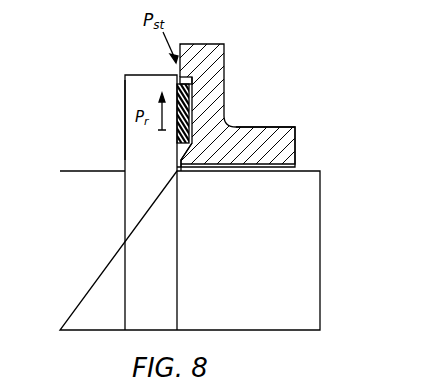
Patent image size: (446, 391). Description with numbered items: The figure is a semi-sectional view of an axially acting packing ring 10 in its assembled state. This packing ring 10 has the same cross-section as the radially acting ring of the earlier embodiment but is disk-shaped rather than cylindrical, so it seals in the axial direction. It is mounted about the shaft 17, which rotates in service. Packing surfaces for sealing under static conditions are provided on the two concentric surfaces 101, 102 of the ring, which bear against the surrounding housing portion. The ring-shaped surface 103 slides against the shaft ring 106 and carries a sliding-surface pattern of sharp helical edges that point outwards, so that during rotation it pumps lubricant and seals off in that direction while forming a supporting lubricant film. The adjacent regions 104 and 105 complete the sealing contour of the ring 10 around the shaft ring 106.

The axially acting packing ring 10 is at (177, 137).
The shaft 17 is at (306, 272).
The concentric surface 101 is at (193, 83).
The concentric surface 102 is at (226, 124).
The ring-shaped surface 103 is at (176, 97).
The lower sealing lip 104 is at (183, 161).
The upper gap 105 is at (182, 76).
The shaft ring 106 is at (125, 122).